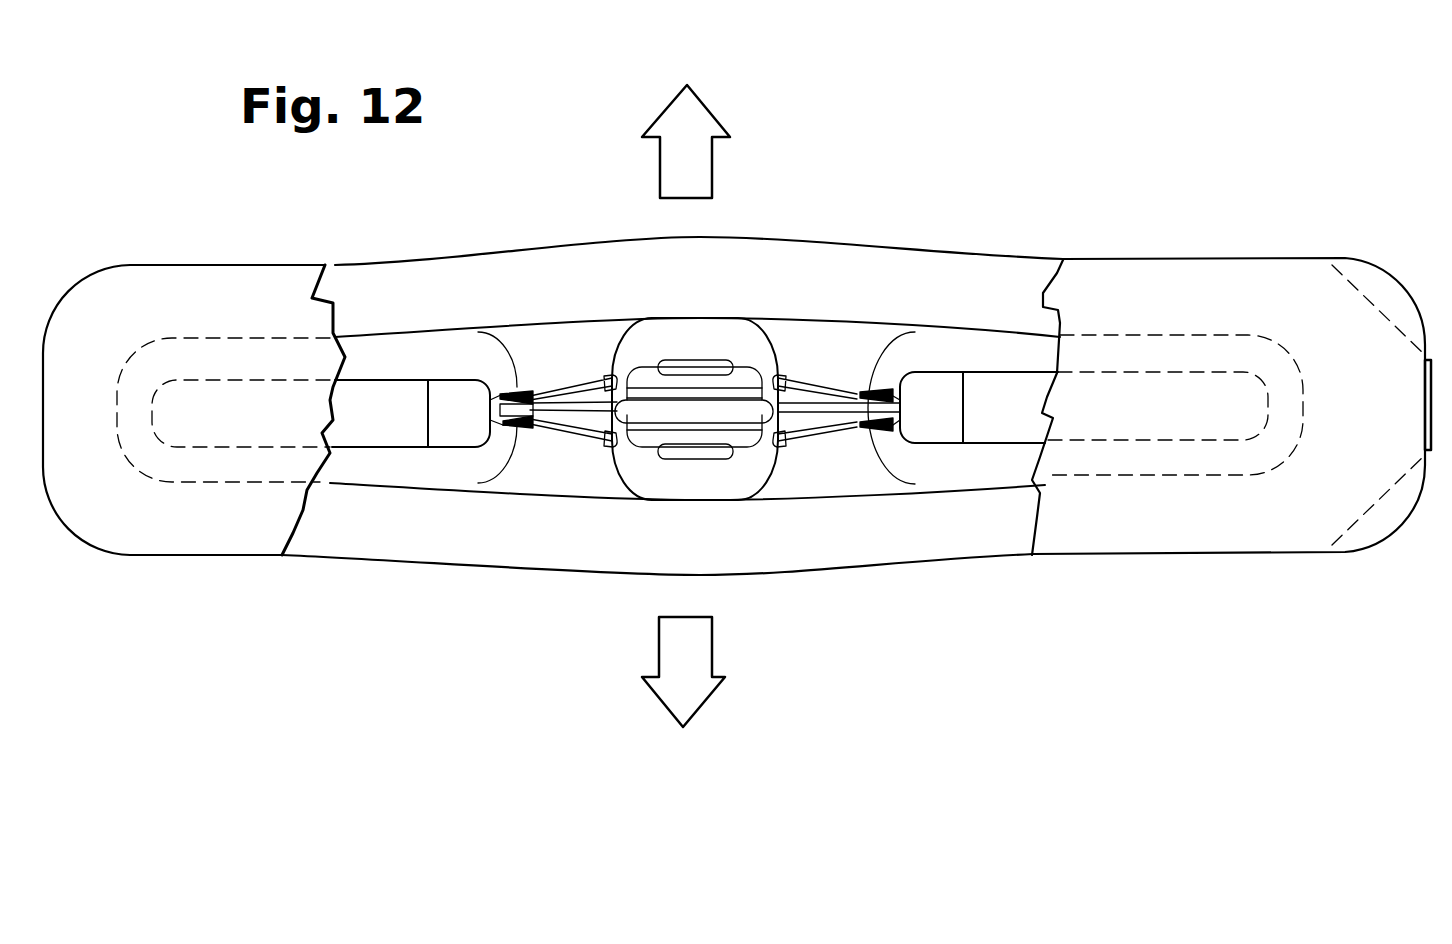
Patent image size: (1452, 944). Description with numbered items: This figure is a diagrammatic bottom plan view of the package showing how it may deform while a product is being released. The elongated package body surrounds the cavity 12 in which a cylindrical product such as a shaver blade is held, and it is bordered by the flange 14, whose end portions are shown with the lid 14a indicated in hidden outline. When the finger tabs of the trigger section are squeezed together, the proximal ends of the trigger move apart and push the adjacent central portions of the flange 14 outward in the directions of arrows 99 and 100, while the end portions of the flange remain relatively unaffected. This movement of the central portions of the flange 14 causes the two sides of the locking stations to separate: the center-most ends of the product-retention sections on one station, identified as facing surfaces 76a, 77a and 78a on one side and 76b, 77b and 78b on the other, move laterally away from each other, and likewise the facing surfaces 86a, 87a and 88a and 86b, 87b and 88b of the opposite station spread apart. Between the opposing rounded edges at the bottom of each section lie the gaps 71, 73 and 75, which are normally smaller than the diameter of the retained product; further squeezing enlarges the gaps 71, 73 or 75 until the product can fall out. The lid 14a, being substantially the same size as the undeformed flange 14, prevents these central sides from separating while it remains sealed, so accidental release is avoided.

The cavity 12 is at (390, 470).
The flange 14 is at (377, 287).
The lid 14a is at (165, 530).
The gap 71 is at (492, 372).
The gap 73 is at (490, 408).
The gap 75 is at (498, 447).
The facing surface 76a is at (612, 376).
The facing surface 77a is at (590, 390).
The facing surface 78a is at (518, 385).
The facing surface 76b is at (595, 432).
The facing surface 77b is at (607, 432).
The facing surface 78b is at (580, 438).
The facing surface 86a is at (780, 380).
The facing surface 87a is at (800, 388).
The facing surface 88a is at (835, 378).
The facing surface 86b is at (785, 437).
The facing surface 87b is at (805, 430).
The facing surface 88b is at (812, 425).
The arrow 99 is at (713, 653).
The arrow 100 is at (713, 177).